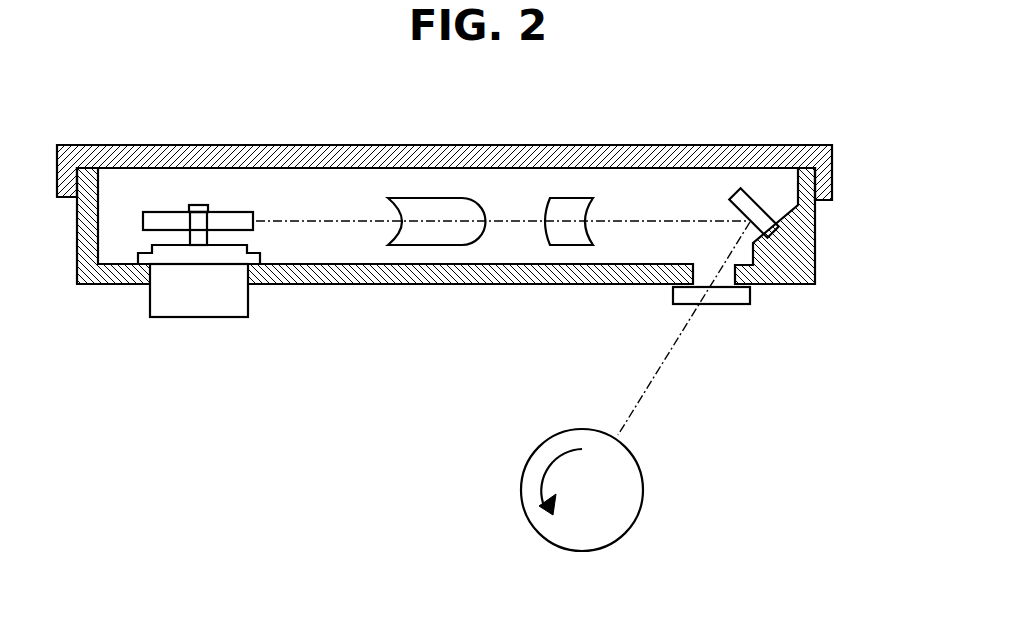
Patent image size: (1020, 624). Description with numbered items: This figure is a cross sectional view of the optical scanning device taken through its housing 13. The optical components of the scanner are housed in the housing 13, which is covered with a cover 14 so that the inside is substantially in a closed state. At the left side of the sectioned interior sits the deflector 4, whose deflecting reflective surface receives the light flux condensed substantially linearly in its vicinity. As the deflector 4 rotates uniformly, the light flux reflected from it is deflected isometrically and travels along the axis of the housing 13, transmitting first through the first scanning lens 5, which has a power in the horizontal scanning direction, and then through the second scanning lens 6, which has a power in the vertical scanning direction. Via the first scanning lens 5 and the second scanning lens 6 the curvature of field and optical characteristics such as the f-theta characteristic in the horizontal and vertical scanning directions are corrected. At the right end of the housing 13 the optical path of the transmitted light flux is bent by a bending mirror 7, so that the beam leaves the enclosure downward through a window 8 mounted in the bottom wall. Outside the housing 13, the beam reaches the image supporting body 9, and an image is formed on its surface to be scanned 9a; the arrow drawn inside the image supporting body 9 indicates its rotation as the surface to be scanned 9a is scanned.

The deflector 4 is at (197, 318).
The first scanning lens 5 is at (442, 198).
The second scanning lens 6 is at (573, 198).
The bending mirror 7 is at (762, 202).
The window 8 is at (728, 304).
The image supporting body 9 is at (641, 494).
The surface to be scanned 9a is at (543, 440).
The housing 13 is at (806, 260).
The cover 14 is at (630, 147).